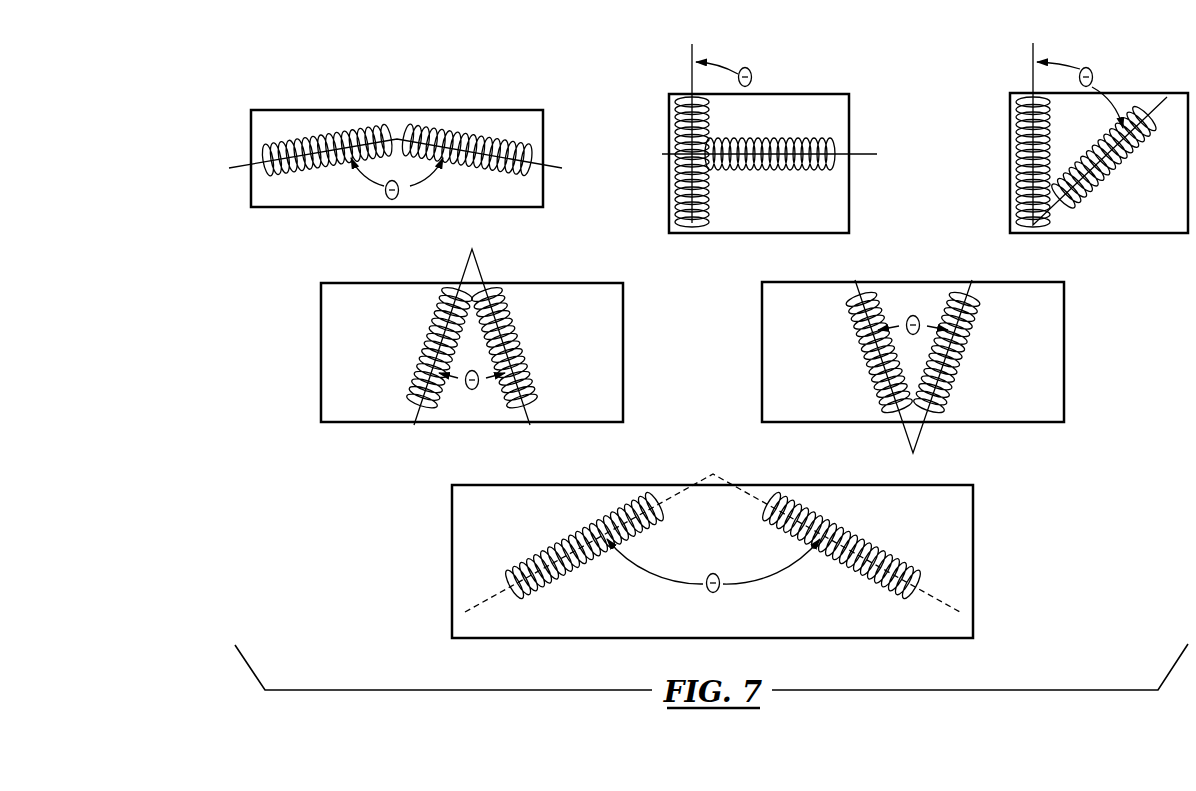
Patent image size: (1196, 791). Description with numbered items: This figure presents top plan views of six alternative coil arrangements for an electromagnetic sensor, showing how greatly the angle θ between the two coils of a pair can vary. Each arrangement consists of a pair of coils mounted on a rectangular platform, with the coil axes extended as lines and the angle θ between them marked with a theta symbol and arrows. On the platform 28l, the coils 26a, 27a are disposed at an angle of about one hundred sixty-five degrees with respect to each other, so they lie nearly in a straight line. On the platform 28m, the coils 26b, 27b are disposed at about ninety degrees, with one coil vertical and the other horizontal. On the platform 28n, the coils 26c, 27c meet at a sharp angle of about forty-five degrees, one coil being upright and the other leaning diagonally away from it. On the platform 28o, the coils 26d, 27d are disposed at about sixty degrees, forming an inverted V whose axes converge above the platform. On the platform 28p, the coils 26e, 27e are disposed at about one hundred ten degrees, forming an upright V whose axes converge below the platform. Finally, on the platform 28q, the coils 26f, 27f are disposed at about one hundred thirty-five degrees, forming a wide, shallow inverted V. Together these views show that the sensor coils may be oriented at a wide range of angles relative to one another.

The coil 26a is at (302, 143).
The coil 27a is at (498, 142).
The platform 28l is at (376, 208).
The coil 26b is at (676, 154).
The coil 27b is at (786, 148).
The platform 28m is at (820, 92).
The coil 26c is at (1018, 152).
The coil 27c is at (1108, 178).
The platform 28n is at (1125, 92).
The coil 26d is at (423, 347).
The coil 27d is at (517, 338).
The platform 28o is at (550, 425).
The coil 26e is at (863, 362).
The coil 27e is at (968, 350).
The platform 28p is at (908, 281).
The coil 26f is at (547, 550).
The coil 27f is at (847, 527).
The platform 28q is at (977, 513).